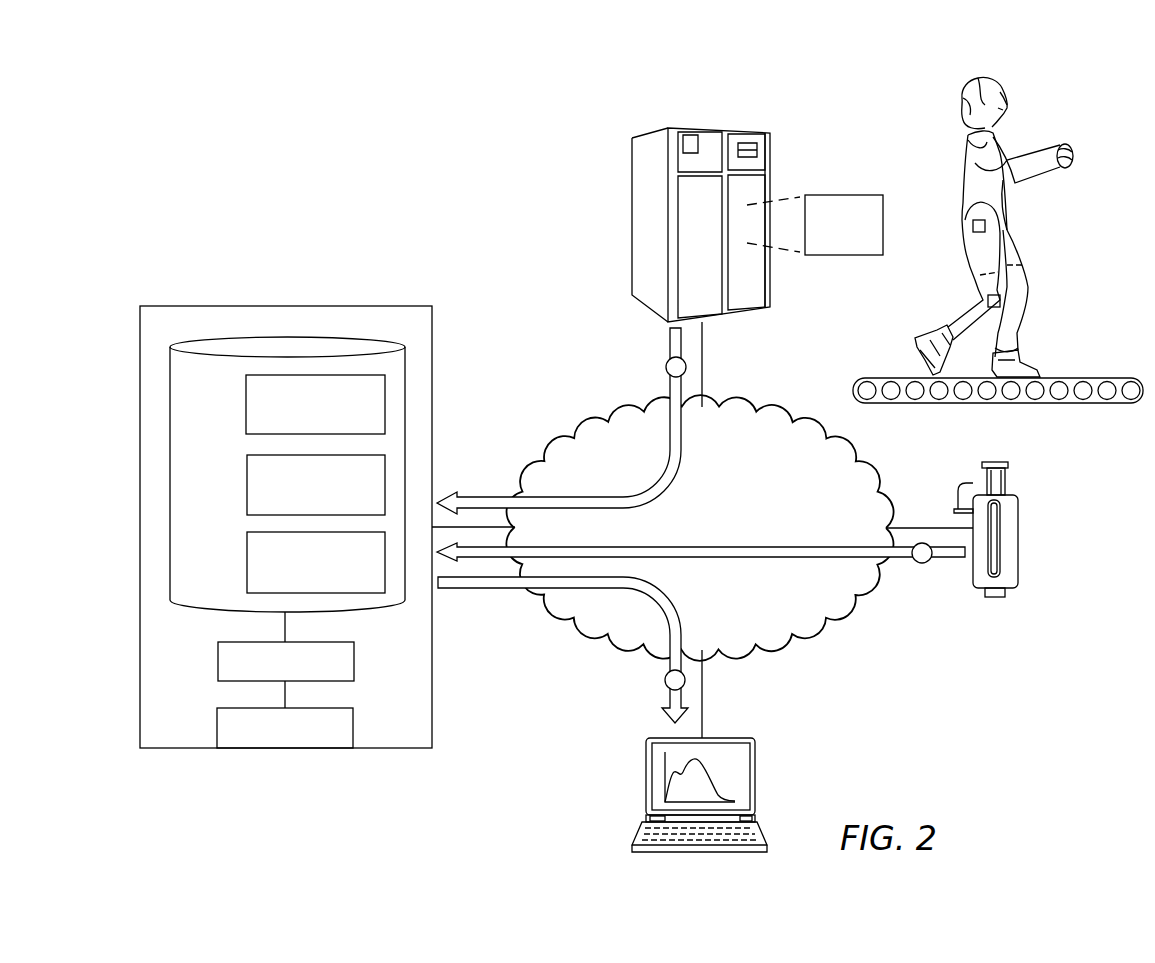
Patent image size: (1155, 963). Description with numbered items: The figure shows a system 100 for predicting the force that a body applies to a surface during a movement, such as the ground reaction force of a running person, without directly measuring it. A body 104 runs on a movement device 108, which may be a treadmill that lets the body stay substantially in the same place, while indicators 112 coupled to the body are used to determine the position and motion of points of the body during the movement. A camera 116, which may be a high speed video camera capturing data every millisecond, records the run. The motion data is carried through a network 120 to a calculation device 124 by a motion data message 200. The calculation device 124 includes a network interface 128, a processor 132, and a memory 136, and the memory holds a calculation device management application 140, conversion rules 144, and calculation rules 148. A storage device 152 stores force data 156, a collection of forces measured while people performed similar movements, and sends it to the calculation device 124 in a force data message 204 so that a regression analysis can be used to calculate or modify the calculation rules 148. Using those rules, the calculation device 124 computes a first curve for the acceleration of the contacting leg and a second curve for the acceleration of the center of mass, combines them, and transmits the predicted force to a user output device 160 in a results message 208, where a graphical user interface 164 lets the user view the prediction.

The system 100 is at (339, 120).
The body 104 is at (1037, 122).
The movement device 108 is at (1093, 377).
The indicators 112 is at (1046, 276).
The camera 116 is at (1018, 540).
The network 120 is at (831, 628).
The calculation device 124 is at (208, 302).
The network interface 128 is at (217, 725).
The processor 132 is at (218, 660).
The memory 136 is at (382, 613).
The calculation device management application 140 is at (246, 407).
The conversion rules 144 is at (247, 483).
The calculation rules 148 is at (247, 563).
The storage device 152 is at (632, 215).
The force data 156 is at (845, 195).
The user output device 160 is at (646, 786).
The graphical user interface 164 is at (740, 768).
The motion data message 200 is at (926, 564).
The force data message 204 is at (666, 367).
The results message 208 is at (663, 683).